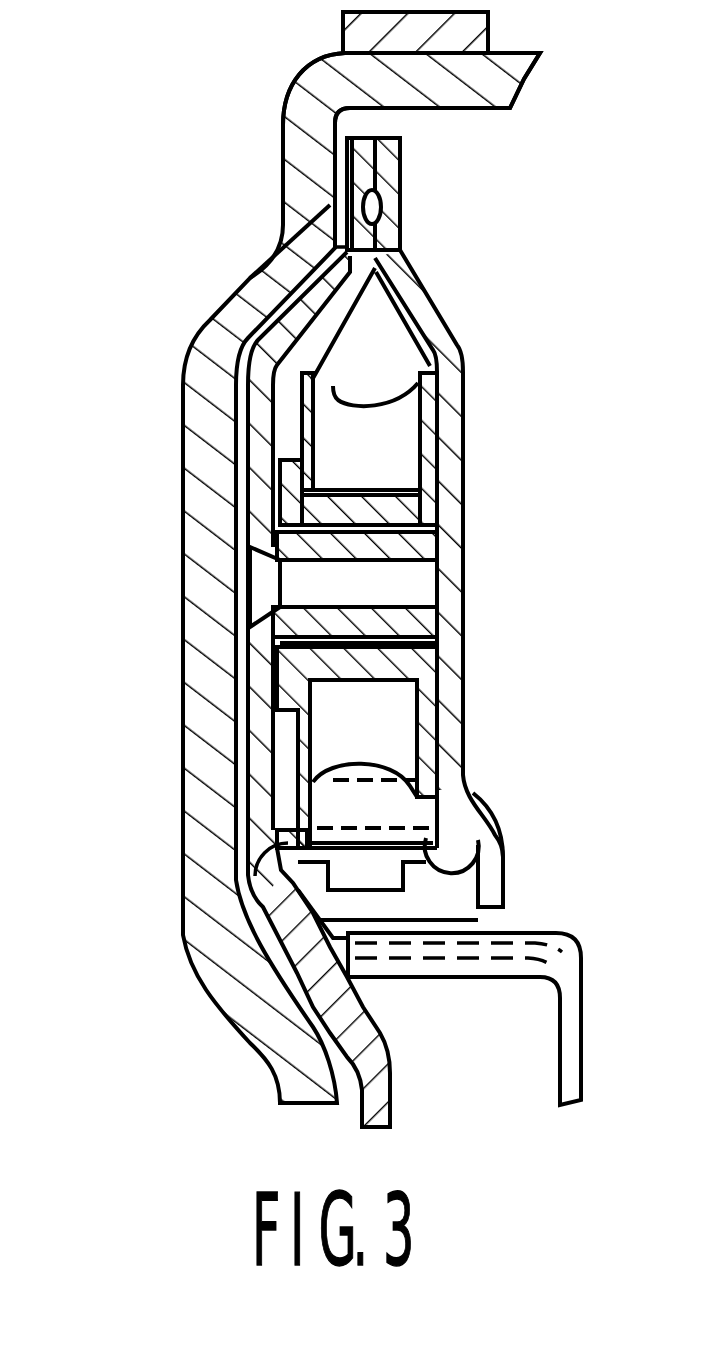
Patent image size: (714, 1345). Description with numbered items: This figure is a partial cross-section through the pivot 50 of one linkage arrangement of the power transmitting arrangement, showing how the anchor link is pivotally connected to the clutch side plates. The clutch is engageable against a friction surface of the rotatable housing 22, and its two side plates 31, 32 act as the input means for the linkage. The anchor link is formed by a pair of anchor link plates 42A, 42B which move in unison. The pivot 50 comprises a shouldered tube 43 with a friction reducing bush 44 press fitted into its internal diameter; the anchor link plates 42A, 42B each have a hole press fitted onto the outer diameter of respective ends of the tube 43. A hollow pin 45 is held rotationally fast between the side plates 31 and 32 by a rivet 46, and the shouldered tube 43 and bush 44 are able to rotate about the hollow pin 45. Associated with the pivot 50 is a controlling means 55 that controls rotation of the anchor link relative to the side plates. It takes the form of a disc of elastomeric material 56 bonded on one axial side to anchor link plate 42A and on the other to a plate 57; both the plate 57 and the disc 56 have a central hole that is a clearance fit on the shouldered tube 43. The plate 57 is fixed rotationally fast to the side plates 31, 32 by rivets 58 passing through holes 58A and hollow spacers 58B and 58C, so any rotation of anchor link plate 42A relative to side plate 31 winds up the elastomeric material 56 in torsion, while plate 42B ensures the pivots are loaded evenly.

The rotatable housing 22 is at (524, 79).
The side plate 31 is at (337, 308).
The side plate 32 is at (392, 247).
The anchor link plate 42A is at (460, 372).
The anchor link plate 42B is at (287, 474).
The shouldered tube 43 is at (413, 513).
The friction reducing bush 44 is at (410, 550).
The hollow pin 45 is at (438, 558).
The rivet 46 is at (440, 593).
The pivot 50 is at (262, 522).
The controlling means 55 is at (445, 420).
The disc of elastomeric material 56 is at (257, 330).
The plate 57 is at (335, 392).
The rivet 58 is at (455, 778).
The hole 58A is at (290, 793).
The hollow spacer 58B is at (287, 874).
The hollow spacer 58C is at (478, 857).